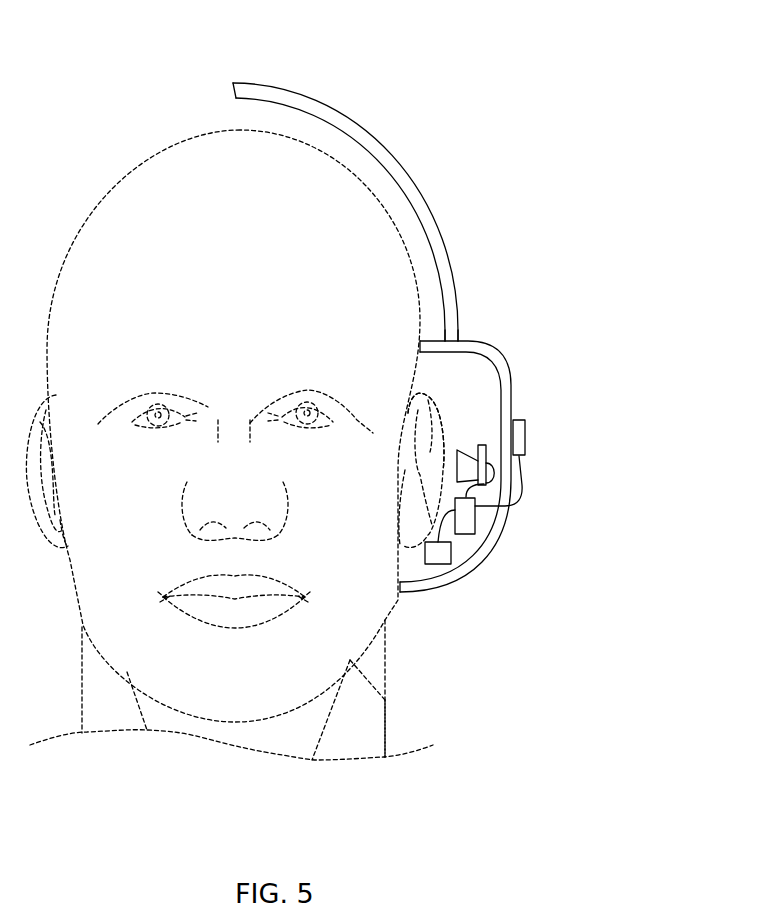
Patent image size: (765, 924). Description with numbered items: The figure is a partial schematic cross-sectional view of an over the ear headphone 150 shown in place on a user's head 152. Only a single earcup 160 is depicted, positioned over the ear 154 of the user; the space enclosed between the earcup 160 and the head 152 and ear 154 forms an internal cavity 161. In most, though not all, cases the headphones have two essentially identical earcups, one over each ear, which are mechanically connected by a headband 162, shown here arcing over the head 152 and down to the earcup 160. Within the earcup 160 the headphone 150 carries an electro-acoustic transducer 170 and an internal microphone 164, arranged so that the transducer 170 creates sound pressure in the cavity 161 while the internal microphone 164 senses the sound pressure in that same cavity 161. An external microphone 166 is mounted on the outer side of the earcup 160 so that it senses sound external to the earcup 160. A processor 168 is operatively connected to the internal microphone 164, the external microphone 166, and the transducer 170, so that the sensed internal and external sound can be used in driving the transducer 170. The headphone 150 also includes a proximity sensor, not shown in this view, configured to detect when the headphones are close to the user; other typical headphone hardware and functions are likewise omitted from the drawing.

The over the ear headphone 150 is at (520, 300).
The user's head 152 is at (385, 698).
The ear 154 is at (398, 468).
The earcup 160 is at (513, 400).
The internal cavity 161 is at (438, 363).
The headband 162 is at (290, 92).
The internal microphone 164 is at (440, 552).
The external microphone 166 is at (522, 450).
The processor 168 is at (467, 515).
The electro-acoustic transducer 170 is at (457, 458).